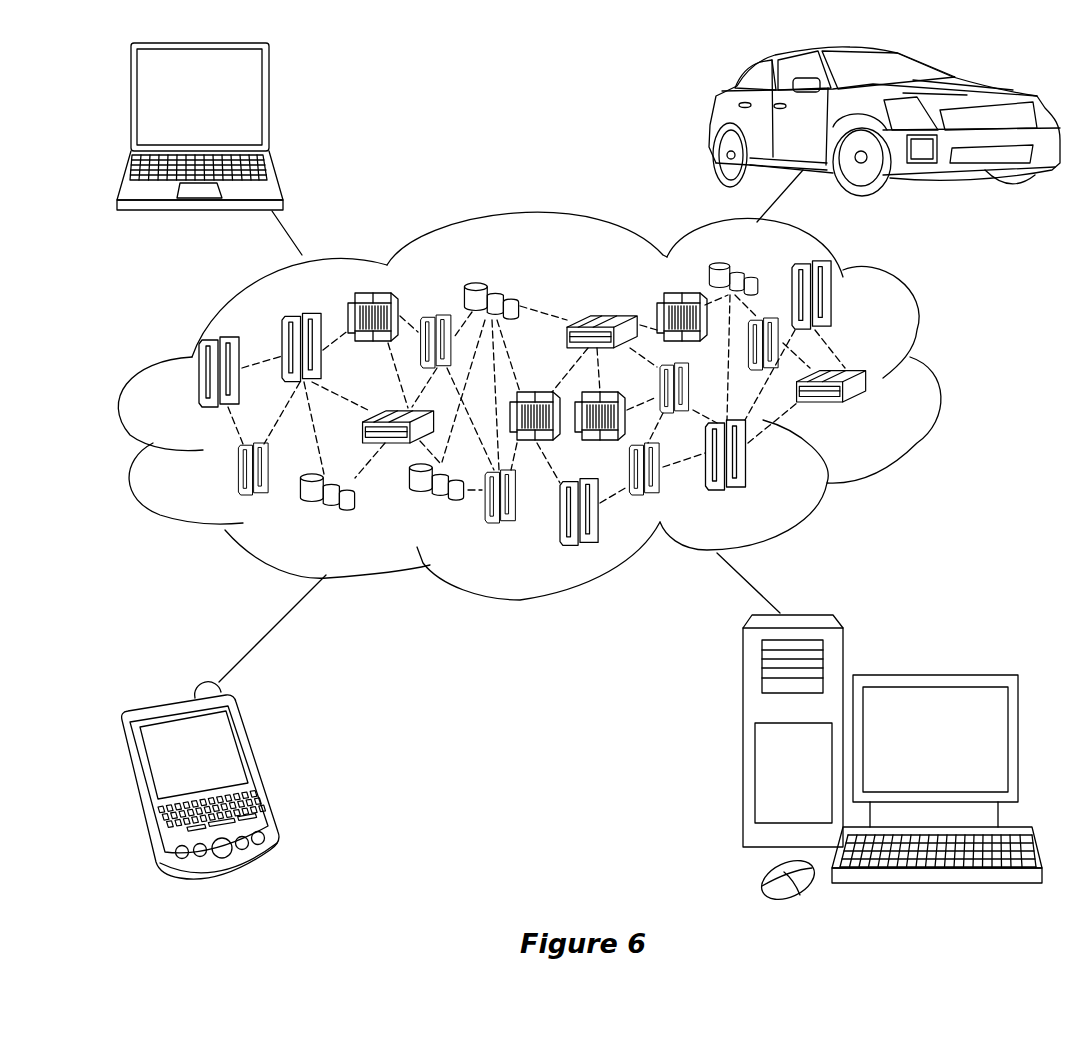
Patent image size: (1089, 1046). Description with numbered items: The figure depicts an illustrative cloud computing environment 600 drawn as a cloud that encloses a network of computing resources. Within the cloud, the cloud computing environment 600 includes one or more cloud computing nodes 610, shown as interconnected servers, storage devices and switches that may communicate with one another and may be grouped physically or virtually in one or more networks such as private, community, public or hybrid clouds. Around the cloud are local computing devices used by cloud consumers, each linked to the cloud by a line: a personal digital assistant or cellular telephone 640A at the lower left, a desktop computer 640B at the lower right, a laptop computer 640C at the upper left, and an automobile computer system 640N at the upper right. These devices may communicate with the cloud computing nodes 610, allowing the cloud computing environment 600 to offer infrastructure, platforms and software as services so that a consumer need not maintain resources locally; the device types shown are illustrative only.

The cloud computing environment 600 is at (935, 382).
The cloud computing nodes 610 is at (880, 414).
The personal digital assistant (PDA) or cellular telephone 640A is at (258, 770).
The desktop computer 640B is at (932, 673).
The laptop computer 640C is at (269, 105).
The automobile computer system 640N is at (710, 122).